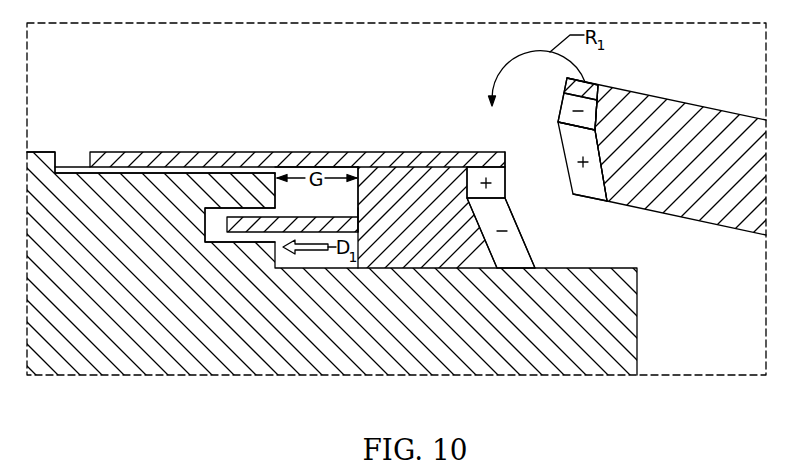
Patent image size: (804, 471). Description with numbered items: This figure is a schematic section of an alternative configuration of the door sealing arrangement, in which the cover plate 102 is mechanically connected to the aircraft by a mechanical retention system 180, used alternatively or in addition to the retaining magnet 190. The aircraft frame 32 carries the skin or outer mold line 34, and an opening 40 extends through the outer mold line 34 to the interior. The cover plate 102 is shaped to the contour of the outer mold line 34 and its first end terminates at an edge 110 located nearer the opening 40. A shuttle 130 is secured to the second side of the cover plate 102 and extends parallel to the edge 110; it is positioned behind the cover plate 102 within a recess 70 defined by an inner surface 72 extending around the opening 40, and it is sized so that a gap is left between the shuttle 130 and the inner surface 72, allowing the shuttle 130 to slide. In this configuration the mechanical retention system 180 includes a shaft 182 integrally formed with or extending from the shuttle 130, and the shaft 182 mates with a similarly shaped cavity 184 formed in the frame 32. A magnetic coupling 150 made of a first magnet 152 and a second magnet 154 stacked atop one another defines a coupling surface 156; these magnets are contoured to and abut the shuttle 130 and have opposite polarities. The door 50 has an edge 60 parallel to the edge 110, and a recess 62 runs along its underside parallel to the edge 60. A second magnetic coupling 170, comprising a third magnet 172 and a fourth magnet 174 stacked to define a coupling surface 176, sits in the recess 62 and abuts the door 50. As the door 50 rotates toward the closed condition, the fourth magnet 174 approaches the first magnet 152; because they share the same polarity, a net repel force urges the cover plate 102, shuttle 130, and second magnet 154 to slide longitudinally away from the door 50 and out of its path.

The frame 32 is at (138, 308).
The outer mold line 34 is at (54, 152).
The retaining magnet 190 is at (83, 167).
The cover plate 102 is at (148, 152).
The cavity 184 is at (220, 198).
The shaft 182 is at (270, 215).
The inner surface 72 is at (276, 196).
The recess 70 is at (340, 188).
The mechanical retention system 180 is at (355, 203).
The shuttle 130 is at (415, 247).
The first magnet 152 is at (475, 170).
The edge 110 is at (505, 162).
The magnetic coupling 150 is at (545, 248).
The coupling surface 156 is at (519, 229).
The second magnet 154 is at (512, 253).
The door 50 is at (746, 194).
The edge 60 is at (566, 82).
The third magnet 172 is at (573, 97).
The coupling surface 176 is at (560, 107).
The recess 62 is at (610, 108).
The magnetic coupling 170 is at (546, 136).
The fourth magnet 174 is at (595, 196).
The opening 40 is at (706, 365).